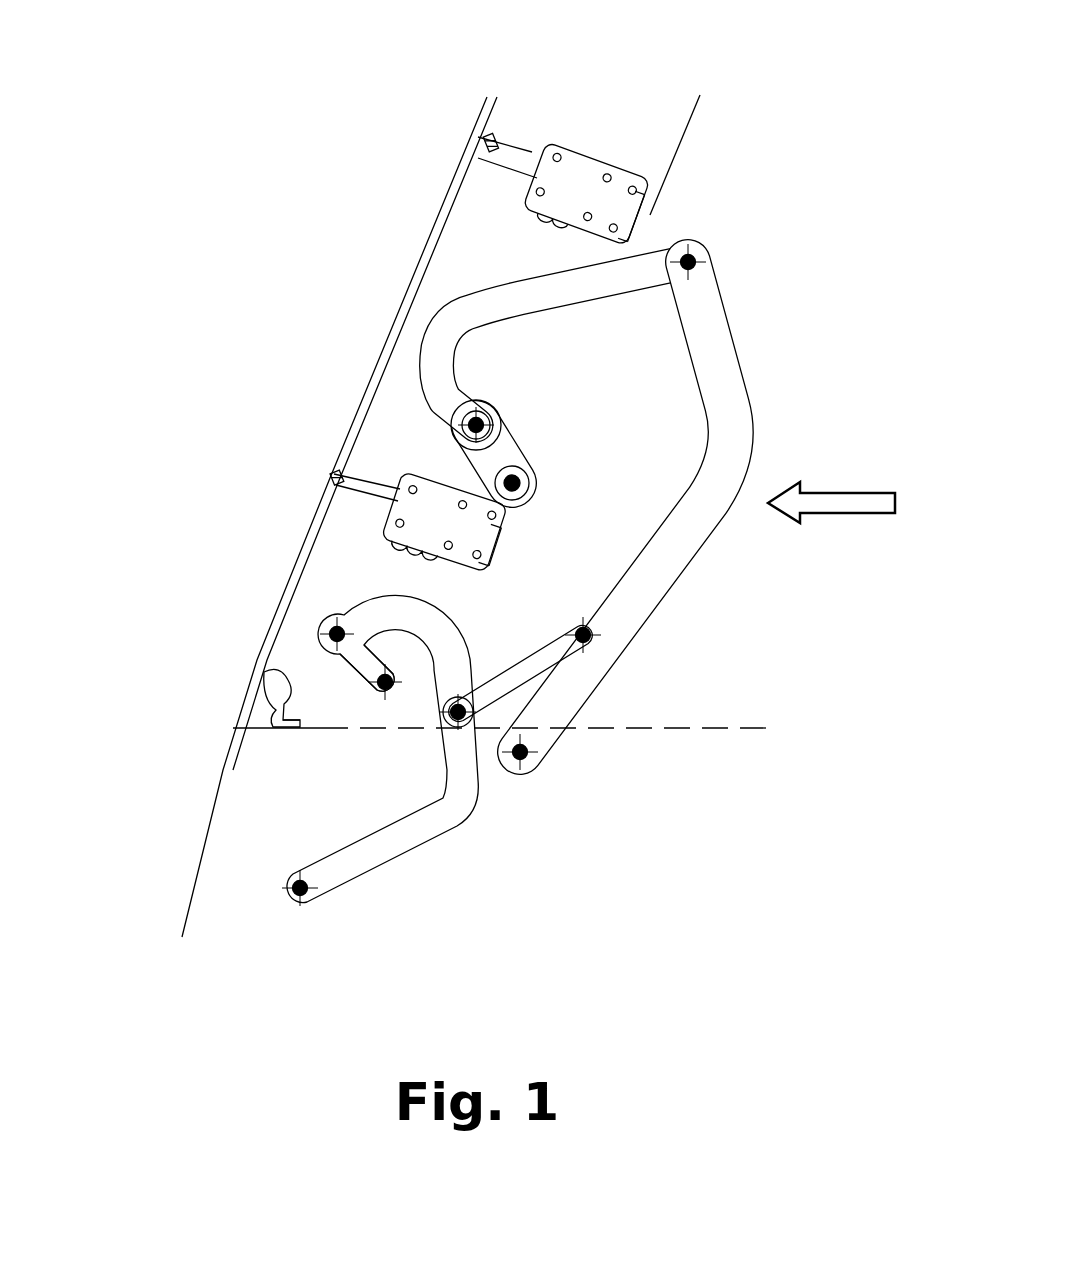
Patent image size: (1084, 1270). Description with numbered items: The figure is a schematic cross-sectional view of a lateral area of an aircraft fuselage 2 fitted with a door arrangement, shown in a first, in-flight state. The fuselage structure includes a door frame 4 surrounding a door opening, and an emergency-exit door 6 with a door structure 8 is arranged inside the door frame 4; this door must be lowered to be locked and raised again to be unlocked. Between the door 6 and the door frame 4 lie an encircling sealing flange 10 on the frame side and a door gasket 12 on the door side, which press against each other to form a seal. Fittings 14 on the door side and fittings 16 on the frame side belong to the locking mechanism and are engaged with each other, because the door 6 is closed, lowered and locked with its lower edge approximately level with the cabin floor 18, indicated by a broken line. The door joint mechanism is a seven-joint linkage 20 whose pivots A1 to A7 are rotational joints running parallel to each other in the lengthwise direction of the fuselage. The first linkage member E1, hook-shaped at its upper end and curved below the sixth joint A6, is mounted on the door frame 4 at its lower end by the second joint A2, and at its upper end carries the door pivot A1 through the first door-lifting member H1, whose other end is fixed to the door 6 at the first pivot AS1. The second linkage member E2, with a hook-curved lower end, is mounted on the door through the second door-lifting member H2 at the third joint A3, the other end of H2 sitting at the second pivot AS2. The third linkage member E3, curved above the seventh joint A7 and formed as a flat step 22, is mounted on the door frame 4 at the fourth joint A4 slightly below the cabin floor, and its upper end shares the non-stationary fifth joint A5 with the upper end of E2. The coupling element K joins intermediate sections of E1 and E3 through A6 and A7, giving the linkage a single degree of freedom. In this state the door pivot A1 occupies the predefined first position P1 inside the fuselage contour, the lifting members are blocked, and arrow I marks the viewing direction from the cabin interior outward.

The aircraft fuselage 2 is at (195, 885).
The door frame 4 is at (302, 728).
The door 6 is at (475, 228).
The door structure 8 is at (650, 213).
The sealing flange 10 is at (280, 725).
The door gasket 12 is at (268, 702).
The fittings 14 is at (577, 152).
The fittings 16 is at (562, 188).
The cabin floor 18 is at (703, 727).
The seven-joint linkage 20 is at (391, 718).
The step 22 is at (537, 501).
The first joint A1 is at (327, 633).
The second joint A2 is at (307, 898).
The third joint A3 is at (493, 422).
The fourth joint A4 is at (525, 760).
The fifth joint A5 is at (692, 258).
The sixth joint A6 is at (460, 702).
The seventh joint A7 is at (593, 635).
The first pivot AS1 is at (385, 700).
The second pivot AS2 is at (520, 483).
The first linkage member E1 is at (377, 612).
The second linkage member E2 is at (447, 338).
The third linkage member E3 is at (712, 315).
The first door-lifting member H1 is at (363, 663).
The second door-lifting member H2 is at (495, 450).
The coupling element K is at (523, 670).
The first position P1 is at (305, 607).
The arrow I is at (850, 502).